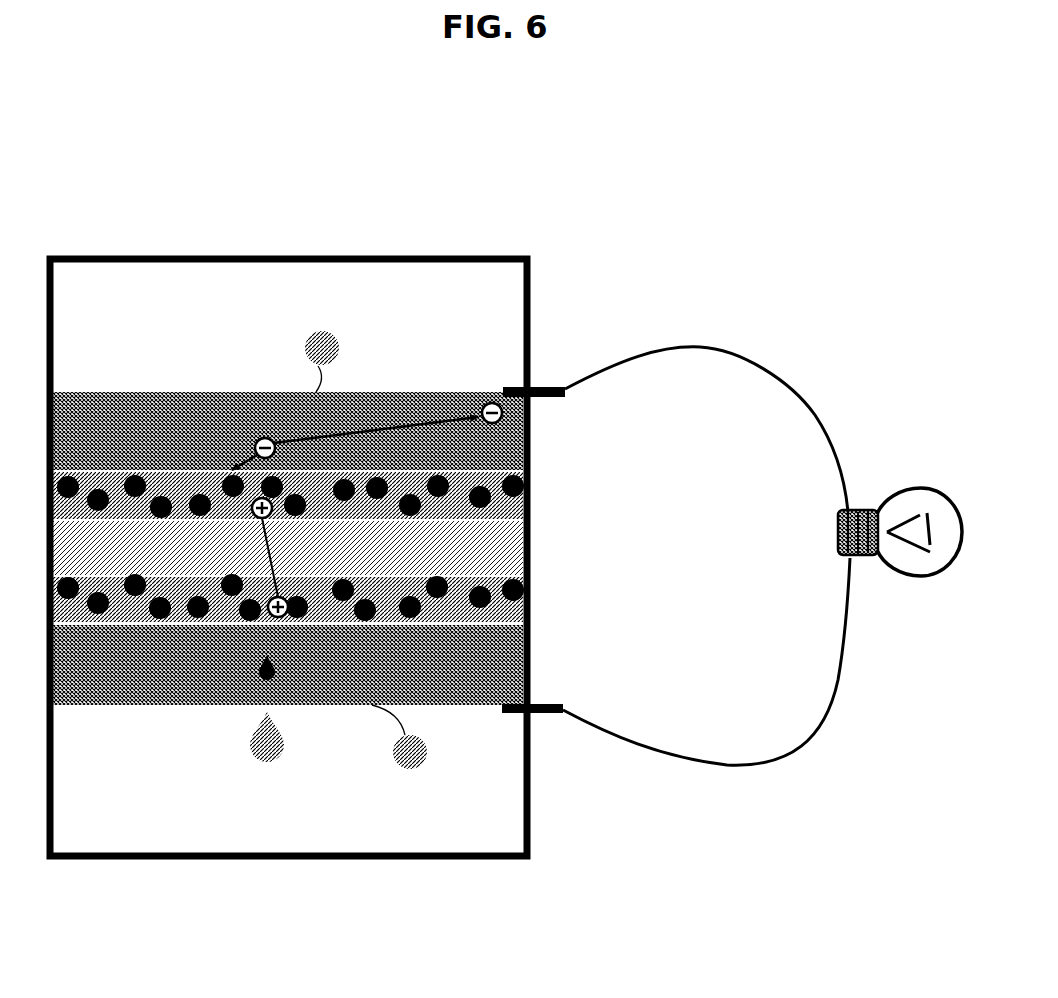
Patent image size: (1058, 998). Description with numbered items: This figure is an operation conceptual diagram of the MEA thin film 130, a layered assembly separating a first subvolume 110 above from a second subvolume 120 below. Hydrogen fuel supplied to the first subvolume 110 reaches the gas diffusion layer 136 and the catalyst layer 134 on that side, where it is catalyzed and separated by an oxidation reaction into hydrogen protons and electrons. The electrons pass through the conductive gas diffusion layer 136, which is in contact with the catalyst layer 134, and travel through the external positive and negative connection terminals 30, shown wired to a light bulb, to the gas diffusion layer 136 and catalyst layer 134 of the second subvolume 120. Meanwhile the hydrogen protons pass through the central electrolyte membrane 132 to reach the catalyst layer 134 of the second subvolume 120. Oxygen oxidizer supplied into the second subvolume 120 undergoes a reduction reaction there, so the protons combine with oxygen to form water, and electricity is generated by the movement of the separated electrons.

The MEA thin film 130 is at (142, 135).
The first subvolume 110 is at (450, 297).
The second subvolume 120 is at (468, 828).
The connection terminals 30 is at (545, 386).
The gas diffusion layer 136 is at (493, 442).
The catalyst layer 134 is at (493, 507).
The electrolyte membrane 132 is at (493, 553).